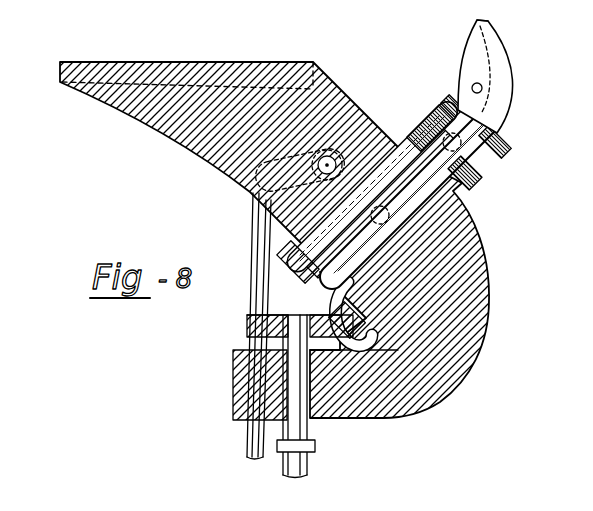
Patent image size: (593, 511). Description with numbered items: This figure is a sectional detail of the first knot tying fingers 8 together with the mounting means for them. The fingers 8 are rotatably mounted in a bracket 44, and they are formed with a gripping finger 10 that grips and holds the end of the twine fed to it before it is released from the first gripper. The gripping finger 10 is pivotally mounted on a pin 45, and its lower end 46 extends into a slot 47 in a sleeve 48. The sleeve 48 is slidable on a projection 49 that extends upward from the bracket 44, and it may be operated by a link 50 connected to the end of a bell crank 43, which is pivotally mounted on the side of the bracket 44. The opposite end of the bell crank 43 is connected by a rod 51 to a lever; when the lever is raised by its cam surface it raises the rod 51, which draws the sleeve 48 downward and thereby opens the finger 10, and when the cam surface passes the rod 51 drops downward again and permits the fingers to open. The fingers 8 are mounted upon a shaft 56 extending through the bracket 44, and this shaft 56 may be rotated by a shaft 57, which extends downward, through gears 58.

The first knot tying fingers 8 is at (465, 54).
The gripping finger 10 is at (473, 33).
The bell crank 43 is at (367, 150).
The bracket 44 is at (468, 235).
The pin 45 is at (482, 87).
The lower end 46 is at (448, 100).
The slot 47 is at (502, 138).
The sleeve 48 is at (478, 170).
The projection 49 is at (455, 195).
The link 50 is at (414, 140).
The rod 51 is at (262, 235).
The shaft 56 is at (310, 279).
The shaft 57 is at (300, 432).
The gears 58 is at (336, 316).